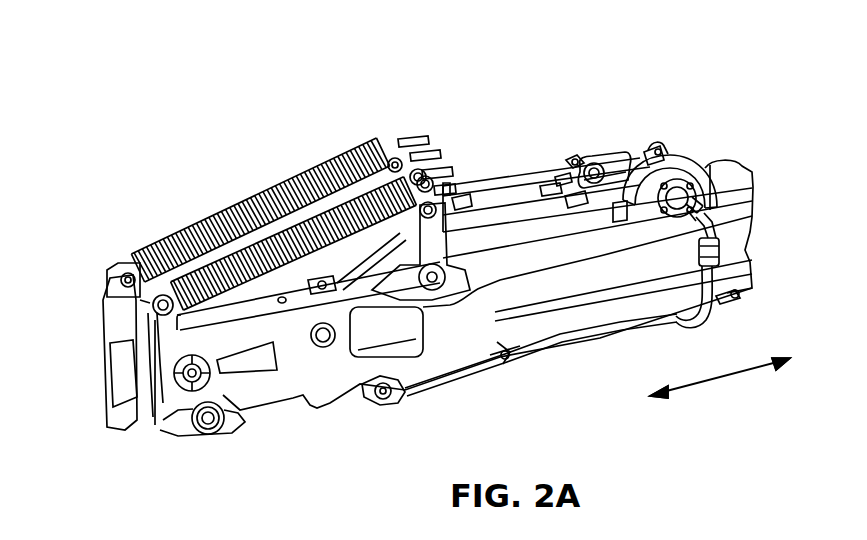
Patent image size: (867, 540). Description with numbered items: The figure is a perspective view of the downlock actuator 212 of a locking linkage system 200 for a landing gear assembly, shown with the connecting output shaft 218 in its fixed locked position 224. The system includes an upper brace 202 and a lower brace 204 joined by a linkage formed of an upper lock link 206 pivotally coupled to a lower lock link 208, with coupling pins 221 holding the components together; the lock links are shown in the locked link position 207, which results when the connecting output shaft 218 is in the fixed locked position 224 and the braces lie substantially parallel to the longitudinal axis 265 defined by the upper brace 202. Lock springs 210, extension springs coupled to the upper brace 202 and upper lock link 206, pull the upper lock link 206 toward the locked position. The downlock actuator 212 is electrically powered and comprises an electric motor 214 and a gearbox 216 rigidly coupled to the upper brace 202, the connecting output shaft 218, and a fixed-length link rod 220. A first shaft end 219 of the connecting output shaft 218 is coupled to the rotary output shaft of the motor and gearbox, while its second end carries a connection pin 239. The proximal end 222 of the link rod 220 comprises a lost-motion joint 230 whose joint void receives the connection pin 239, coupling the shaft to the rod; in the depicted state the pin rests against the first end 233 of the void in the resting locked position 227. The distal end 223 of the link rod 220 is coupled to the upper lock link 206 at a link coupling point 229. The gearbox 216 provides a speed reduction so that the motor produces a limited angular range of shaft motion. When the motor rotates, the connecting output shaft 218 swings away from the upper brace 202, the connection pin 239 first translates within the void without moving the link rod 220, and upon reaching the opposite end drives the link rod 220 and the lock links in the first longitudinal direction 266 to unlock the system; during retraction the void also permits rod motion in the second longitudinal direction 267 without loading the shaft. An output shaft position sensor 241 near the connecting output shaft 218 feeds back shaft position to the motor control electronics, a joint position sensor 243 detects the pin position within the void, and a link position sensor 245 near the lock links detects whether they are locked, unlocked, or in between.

The locking linkage system 200 is at (202, 84).
The upper brace 202 is at (567, 336).
The lower brace 204 is at (127, 415).
The upper lock link 206 is at (367, 267).
The locked link position 207 is at (298, 289).
The lower lock link 208 is at (203, 433).
The lock springs 210 is at (226, 218).
The downlock actuator 212 is at (625, 76).
The electric motor 214 is at (680, 193).
The gearbox 216 is at (703, 166).
The connecting output shaft 218 is at (631, 142).
The first shaft end 219 is at (615, 197).
The link rod 220 is at (458, 203).
The coupling pins 221 is at (150, 364).
The proximal end 222 is at (566, 175).
The distal end 223 is at (446, 194).
The fixed locked position 224 is at (642, 145).
The resting locked position 227 is at (560, 187).
The link coupling point 229 is at (431, 218).
The lost-motion joint 230 is at (614, 160).
The first end 233 is at (577, 146).
The connection pin 239 is at (584, 197).
The output shaft position sensor 241 is at (667, 148).
The joint position sensor 243 is at (576, 198).
The link position sensor 245 is at (362, 398).
The longitudinal axis 265 is at (722, 374).
The first longitudinal direction 266 is at (768, 378).
The second longitudinal direction 267 is at (662, 406).